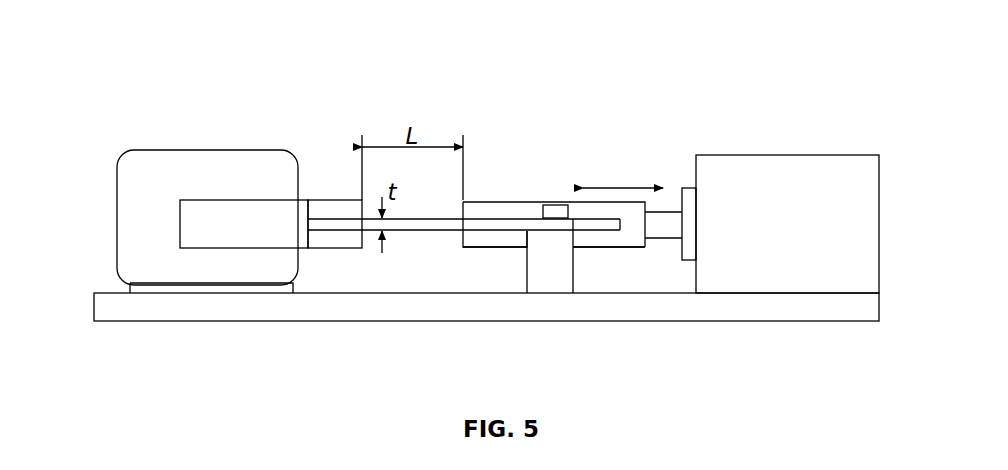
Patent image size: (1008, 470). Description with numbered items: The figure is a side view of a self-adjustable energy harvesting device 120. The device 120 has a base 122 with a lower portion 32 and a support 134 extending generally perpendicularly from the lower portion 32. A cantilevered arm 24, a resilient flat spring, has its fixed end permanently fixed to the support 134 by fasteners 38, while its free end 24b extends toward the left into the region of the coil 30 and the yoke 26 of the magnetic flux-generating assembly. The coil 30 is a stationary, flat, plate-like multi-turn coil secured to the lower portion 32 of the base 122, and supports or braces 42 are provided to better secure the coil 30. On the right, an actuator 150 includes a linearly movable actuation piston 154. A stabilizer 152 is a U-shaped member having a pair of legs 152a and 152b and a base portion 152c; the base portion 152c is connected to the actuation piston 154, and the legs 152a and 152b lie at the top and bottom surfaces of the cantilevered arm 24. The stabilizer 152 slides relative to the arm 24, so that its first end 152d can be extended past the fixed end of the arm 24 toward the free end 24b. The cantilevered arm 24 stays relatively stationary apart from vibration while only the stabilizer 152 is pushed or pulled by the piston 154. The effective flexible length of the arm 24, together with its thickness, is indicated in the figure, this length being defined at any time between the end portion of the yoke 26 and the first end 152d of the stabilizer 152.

The self-adjustable energy harvesting device 120 is at (650, 98).
The coil 30 is at (173, 162).
The yoke 26 is at (285, 213).
The cantilevered arm 24 is at (407, 233).
The free end 24b is at (340, 225).
The supports or braces 42 is at (160, 288).
The lower portion 32 is at (438, 308).
The stabilizer 152 is at (490, 200).
The leg 152a is at (605, 212).
The leg 152b is at (602, 238).
The base portion 152c is at (633, 223).
The first end 152d is at (463, 238).
The fasteners 38 is at (557, 208).
The support 134 is at (552, 277).
The actuation piston 154 is at (667, 210).
The actuator 150 is at (773, 160).
The base 122 is at (663, 323).